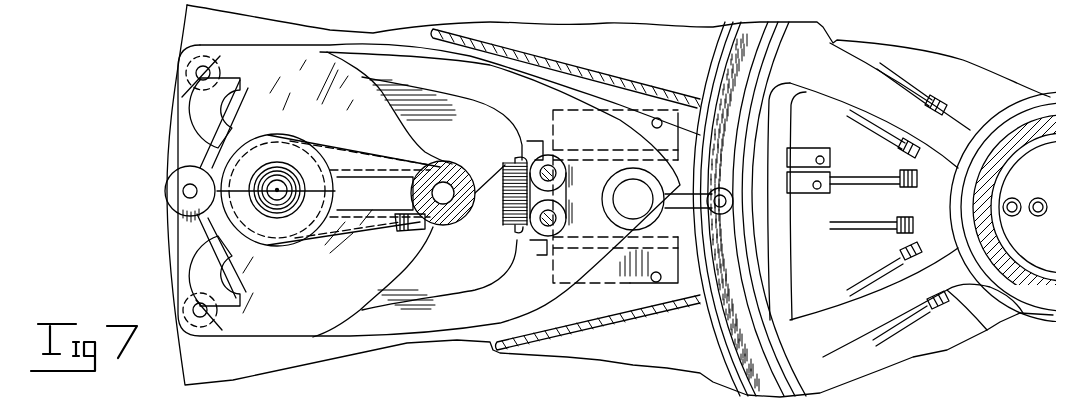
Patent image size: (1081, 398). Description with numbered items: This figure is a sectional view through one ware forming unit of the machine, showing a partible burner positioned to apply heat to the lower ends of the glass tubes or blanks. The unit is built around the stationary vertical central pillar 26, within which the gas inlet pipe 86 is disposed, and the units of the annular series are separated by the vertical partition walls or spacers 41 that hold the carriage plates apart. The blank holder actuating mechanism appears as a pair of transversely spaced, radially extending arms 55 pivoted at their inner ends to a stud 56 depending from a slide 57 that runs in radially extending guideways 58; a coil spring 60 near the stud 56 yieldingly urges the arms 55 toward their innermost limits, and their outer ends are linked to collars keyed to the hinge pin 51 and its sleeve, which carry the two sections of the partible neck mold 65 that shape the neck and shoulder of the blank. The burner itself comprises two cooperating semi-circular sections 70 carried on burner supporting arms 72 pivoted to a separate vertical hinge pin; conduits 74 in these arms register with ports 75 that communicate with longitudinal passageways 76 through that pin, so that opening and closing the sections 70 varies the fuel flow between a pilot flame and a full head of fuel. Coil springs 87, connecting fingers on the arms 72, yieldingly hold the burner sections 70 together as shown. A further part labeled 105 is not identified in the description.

The central pillar 26 is at (1003, 162).
The partition walls 41 is at (653, 86).
The hinge pin 51 is at (165, 191).
The radially extending arms 55 is at (488, 92).
The stud 56 is at (633, 199).
The slide 57 is at (558, 188).
The guideways 58 is at (563, 242).
The coil spring 60 is at (520, 240).
The partible neck mold 65 is at (182, 136).
The burner sections 70 is at (263, 140).
The burner supporting arms 72 is at (333, 140).
The conduits 74 is at (405, 226).
The ports 75 is at (428, 230).
The longitudinal passageways 76 is at (440, 182).
The inlet pipe 86 is at (1015, 212).
The coil springs 87 is at (500, 224).
The hole 105 is at (1044, 188).